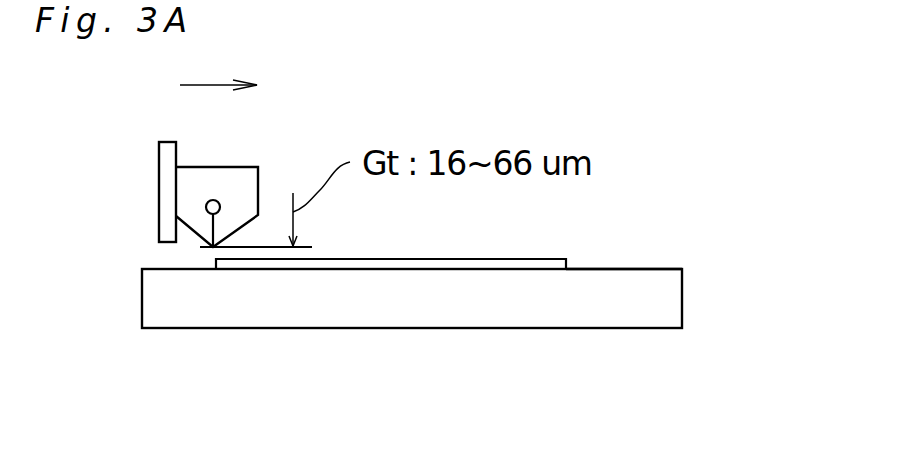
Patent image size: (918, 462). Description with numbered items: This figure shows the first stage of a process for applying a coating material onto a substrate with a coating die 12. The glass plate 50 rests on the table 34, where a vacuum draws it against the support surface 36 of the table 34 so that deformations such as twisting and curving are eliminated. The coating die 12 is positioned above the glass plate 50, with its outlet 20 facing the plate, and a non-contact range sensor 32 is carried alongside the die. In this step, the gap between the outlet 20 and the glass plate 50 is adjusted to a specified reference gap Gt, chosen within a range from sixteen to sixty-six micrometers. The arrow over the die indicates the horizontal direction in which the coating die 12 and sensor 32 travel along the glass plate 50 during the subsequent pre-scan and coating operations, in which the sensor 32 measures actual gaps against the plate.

The coating die 12 is at (252, 167).
The outlet 20 is at (213, 247).
The non-contact range sensor 32 is at (166, 193).
The table 34 is at (667, 303).
The support surface 36 is at (622, 270).
The glass plate 50 is at (536, 264).